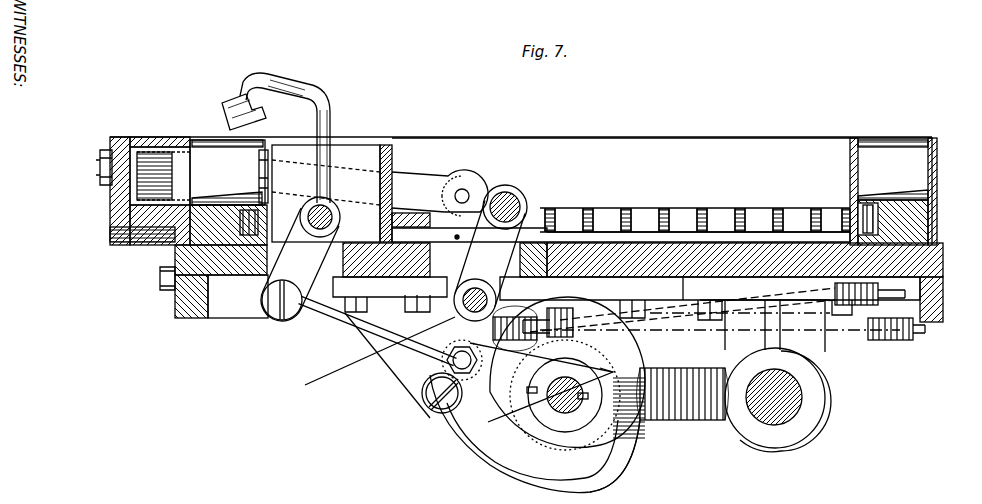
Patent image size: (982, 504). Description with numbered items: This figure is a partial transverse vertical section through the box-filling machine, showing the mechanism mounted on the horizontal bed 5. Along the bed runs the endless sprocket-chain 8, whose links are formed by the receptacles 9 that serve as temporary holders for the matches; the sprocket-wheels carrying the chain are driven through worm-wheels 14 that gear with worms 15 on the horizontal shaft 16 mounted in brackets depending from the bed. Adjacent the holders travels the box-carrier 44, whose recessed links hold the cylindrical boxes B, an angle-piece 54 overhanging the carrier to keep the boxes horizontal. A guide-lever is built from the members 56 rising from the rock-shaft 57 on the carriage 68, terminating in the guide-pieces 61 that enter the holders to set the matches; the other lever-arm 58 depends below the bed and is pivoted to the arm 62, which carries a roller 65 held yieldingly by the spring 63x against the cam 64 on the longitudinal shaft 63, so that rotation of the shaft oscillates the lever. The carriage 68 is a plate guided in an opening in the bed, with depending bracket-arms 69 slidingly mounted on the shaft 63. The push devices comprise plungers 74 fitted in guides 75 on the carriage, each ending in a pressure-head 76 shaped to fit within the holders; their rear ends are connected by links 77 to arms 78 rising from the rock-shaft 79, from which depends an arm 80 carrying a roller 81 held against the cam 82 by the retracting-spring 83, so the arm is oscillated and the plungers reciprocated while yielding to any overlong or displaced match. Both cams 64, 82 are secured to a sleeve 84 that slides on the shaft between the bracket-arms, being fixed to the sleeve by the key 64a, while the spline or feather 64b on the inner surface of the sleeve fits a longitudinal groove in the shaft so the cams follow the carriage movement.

The horizontal bed 5 is at (945, 277).
The endless sprocket-chain 8 is at (805, 215).
The receptacles 9 is at (858, 155).
The worm-wheels 14 is at (703, 422).
The worms 15 is at (828, 420).
The horizontal shaft 16 is at (798, 400).
The box-carrier 44 is at (130, 206).
The angle-piece 54 is at (112, 133).
The members 56 is at (326, 108).
The rock-shaft 57 is at (340, 218).
The lever-arm 58 is at (300, 264).
The guide-pieces 61 is at (222, 103).
The arm 62 is at (346, 330).
The shaft 63 is at (585, 402).
The spring 63x is at (567, 317).
The cam 64 is at (582, 474).
The key 64a is at (527, 390).
The spline or feather 64b is at (613, 372).
The roller 65 is at (362, 356).
The carriage 68 is at (448, 250).
The bracket-arms 69 is at (400, 372).
The plungers 74 is at (425, 175).
The guides 75 is at (382, 145).
The pressure-heads 76 is at (259, 172).
The links 77 is at (487, 190).
The arms 78 is at (490, 254).
The rock-shaft 79 is at (458, 305).
The arm 80 is at (445, 367).
The roller 81 is at (432, 412).
The cam 82 is at (480, 452).
The retracting-spring 83 is at (500, 317).
The sleeve 84 is at (565, 413).
The cylindrical boxes B is at (143, 145).